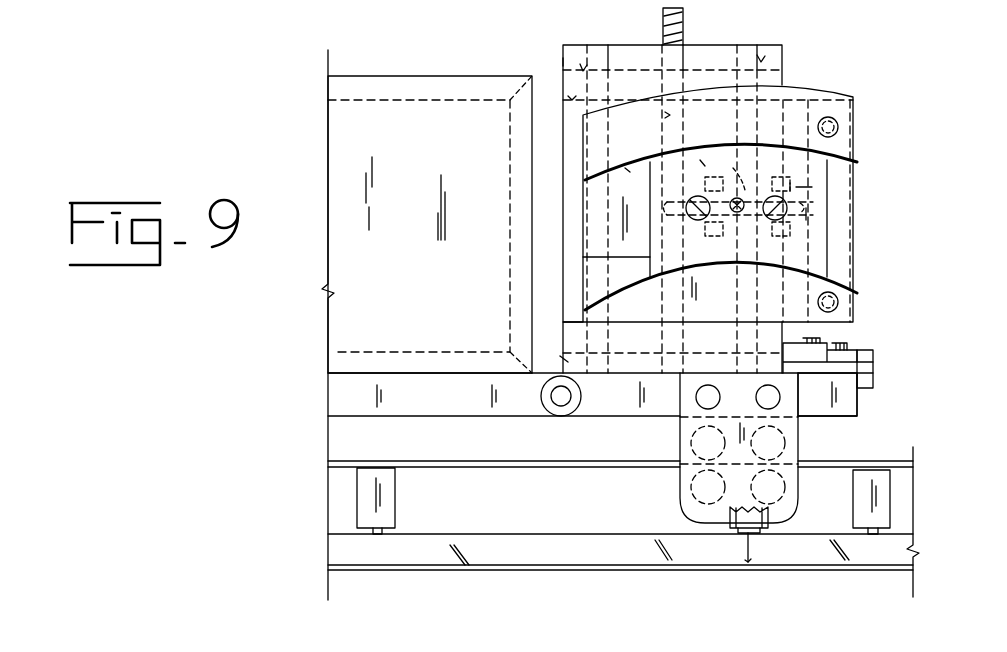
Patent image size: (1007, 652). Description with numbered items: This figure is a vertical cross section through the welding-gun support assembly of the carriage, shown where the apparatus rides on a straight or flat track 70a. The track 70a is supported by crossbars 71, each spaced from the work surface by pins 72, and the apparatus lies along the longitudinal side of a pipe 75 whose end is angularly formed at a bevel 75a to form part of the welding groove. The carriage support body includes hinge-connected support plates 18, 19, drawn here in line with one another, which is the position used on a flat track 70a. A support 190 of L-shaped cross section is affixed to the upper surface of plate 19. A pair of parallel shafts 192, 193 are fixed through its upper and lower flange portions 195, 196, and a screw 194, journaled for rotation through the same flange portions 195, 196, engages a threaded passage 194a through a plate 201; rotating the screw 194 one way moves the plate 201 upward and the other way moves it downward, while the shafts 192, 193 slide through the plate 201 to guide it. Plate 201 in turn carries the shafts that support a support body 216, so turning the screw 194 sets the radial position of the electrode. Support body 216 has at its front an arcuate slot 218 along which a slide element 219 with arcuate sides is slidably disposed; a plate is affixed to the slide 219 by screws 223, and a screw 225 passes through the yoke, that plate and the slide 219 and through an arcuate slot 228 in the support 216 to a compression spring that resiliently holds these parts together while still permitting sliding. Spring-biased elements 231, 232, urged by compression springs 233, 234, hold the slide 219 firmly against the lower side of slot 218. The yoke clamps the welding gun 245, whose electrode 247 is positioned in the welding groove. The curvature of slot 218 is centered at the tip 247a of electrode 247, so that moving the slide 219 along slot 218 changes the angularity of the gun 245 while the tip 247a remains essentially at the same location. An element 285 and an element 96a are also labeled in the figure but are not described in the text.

The housing box 285 is at (409, 76).
The support 190 is at (629, 45).
The screw 194 is at (684, 23).
The threaded passage 194a is at (668, 113).
The shaft 192 is at (761, 60).
The shaft 193 is at (583, 68).
The upper flange portion 195 is at (563, 62).
The plate 201 is at (572, 100).
The lower flange portion 196 is at (568, 362).
The support body 216 is at (857, 124).
The arcuate slot 218 is at (627, 170).
The slide element 219 is at (583, 257).
The screws 223 is at (768, 214).
The screw 225 is at (747, 193).
The arcuate slot 228 is at (812, 213).
The spring biased element 231 is at (705, 162).
The spring biased element 232 is at (830, 162).
The compression spring 233 is at (707, 187).
The compression spring 234 is at (793, 187).
The welding gun 245 is at (680, 512).
The welding electrode 247 is at (752, 550).
The tip 247a is at (747, 563).
The stop member 96a is at (873, 366).
The support plate 18 is at (328, 393).
The support plate 19 is at (858, 405).
The flat track 70a is at (548, 461).
The crossbar 71 is at (396, 498).
The pins 72 is at (380, 535).
The pipe 75 is at (527, 527).
The angularly formed pipe end 75a is at (603, 550).